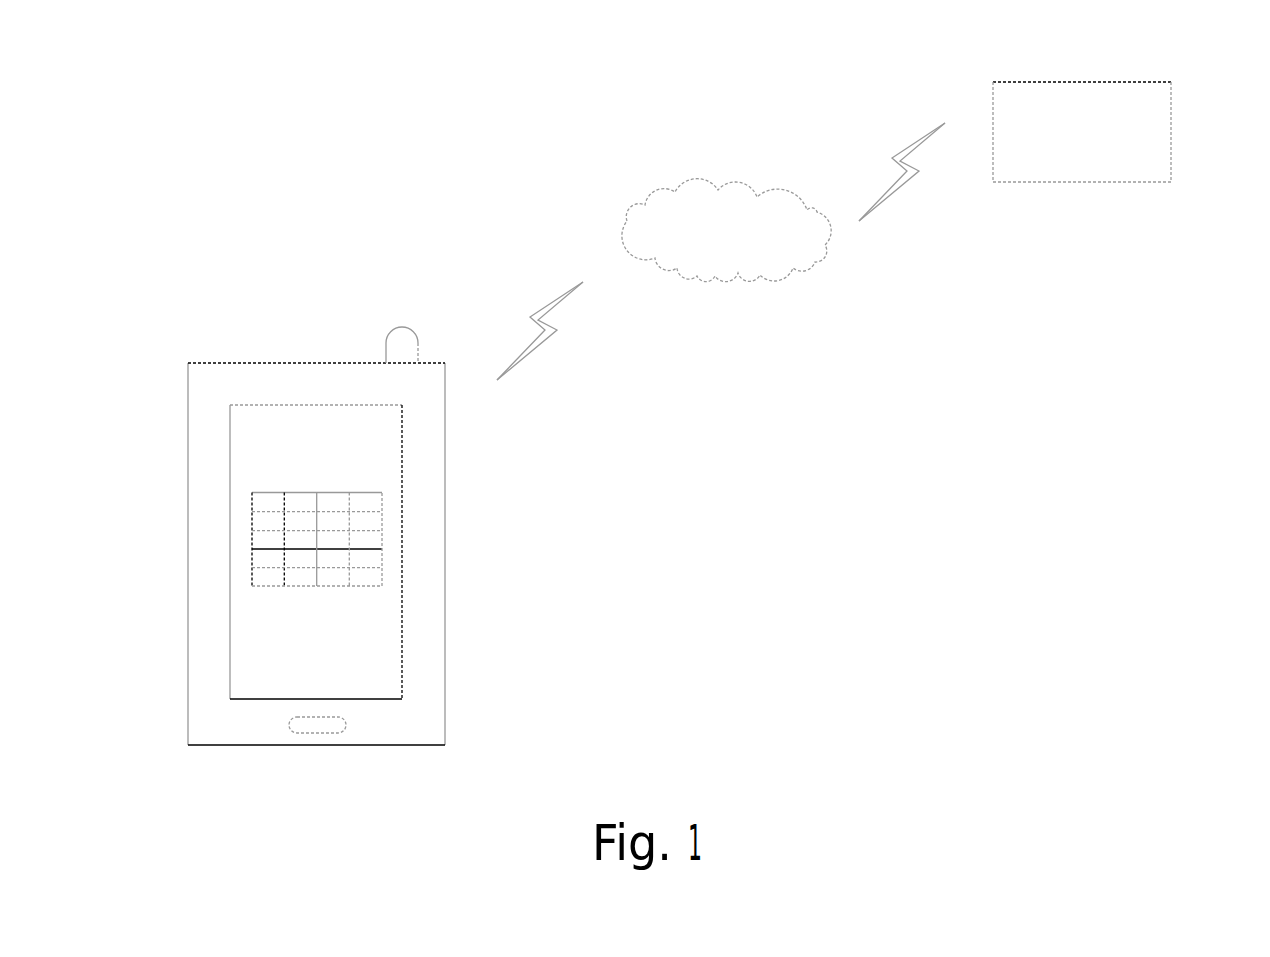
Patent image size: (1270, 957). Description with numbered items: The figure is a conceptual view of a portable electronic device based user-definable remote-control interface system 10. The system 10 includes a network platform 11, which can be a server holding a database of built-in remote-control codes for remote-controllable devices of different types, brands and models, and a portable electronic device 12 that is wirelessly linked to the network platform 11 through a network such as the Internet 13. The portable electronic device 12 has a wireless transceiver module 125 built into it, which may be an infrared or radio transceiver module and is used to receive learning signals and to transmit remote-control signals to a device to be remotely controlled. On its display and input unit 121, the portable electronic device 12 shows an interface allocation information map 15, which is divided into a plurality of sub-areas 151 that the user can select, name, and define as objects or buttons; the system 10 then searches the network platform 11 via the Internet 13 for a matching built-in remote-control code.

The portable electronic device based user-definable remote-control interface system 10 is at (262, 84).
The network platform 11 is at (1173, 112).
The Internet 13 is at (720, 190).
The portable electronic device 12 is at (445, 697).
The wireless transceiver module 125 is at (383, 340).
The display and input unit 121 is at (235, 668).
The interface allocation information map 15 is at (382, 522).
The sub-area 151 is at (255, 502).